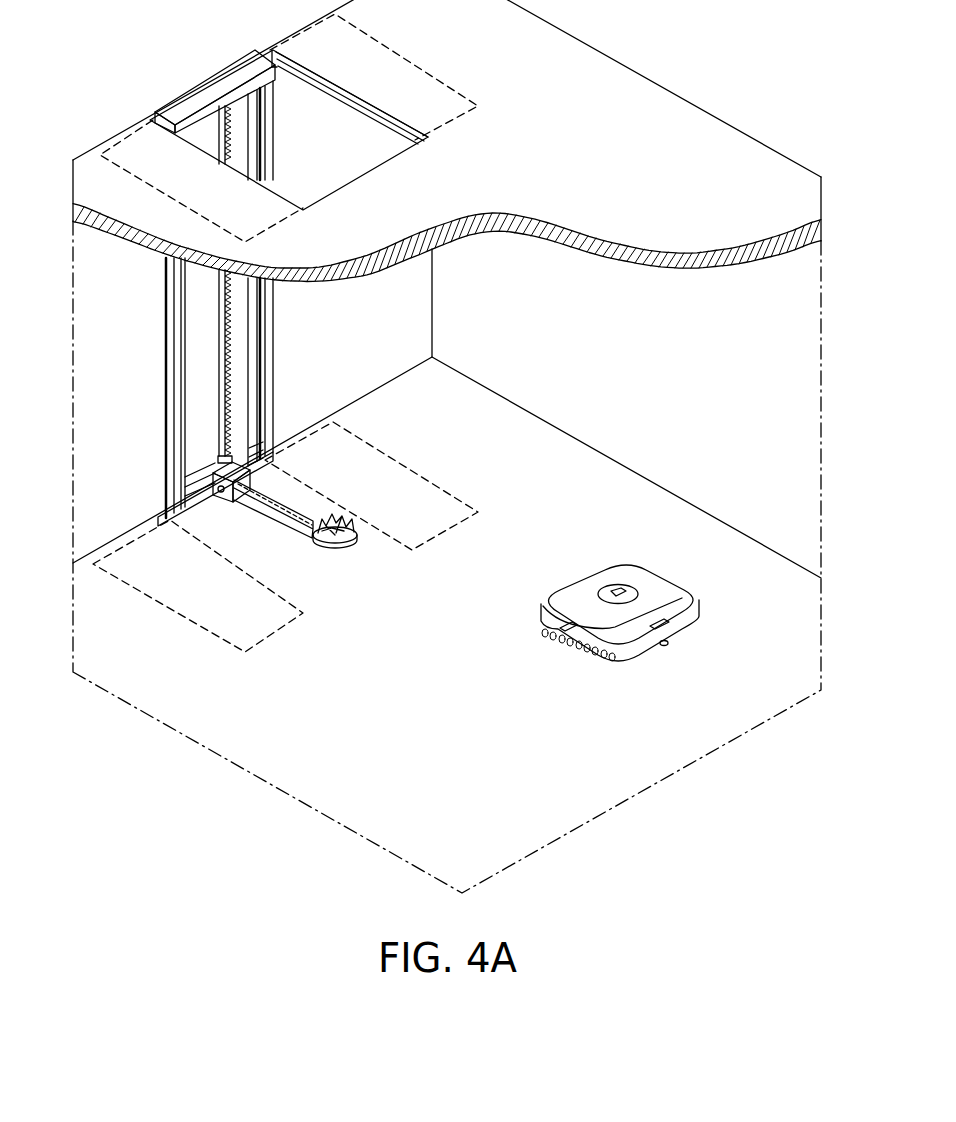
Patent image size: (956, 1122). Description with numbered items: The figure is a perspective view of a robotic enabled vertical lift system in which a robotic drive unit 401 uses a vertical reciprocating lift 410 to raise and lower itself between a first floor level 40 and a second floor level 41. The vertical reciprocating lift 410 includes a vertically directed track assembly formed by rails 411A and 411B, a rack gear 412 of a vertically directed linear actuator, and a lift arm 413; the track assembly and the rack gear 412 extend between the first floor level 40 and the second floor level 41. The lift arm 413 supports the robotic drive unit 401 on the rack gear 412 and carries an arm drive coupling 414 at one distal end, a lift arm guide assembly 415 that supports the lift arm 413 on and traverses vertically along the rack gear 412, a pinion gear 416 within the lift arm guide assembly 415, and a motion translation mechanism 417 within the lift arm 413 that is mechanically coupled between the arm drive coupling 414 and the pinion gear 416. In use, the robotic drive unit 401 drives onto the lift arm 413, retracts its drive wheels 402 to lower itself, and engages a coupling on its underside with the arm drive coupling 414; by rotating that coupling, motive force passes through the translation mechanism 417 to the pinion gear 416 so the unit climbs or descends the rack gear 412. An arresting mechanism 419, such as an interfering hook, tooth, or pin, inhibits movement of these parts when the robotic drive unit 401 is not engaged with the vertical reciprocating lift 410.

The first floor level 40 is at (464, 799).
The second floor level 41 is at (654, 134).
The robotic drive unit 401 is at (647, 578).
The drive wheels 402 is at (663, 643).
The vertical reciprocating lift 410 is at (286, 334).
The rail 411A is at (267, 369).
The rail 411B is at (177, 400).
The rack gear 412 is at (218, 315).
The lift arm 413 is at (294, 500).
The arm drive coupling 414 is at (350, 523).
The lift arm guide assembly 415 is at (223, 505).
The pinion gear 416 is at (217, 495).
The motion translation mechanism 417 is at (299, 533).
The arresting mechanism 419 is at (223, 462).